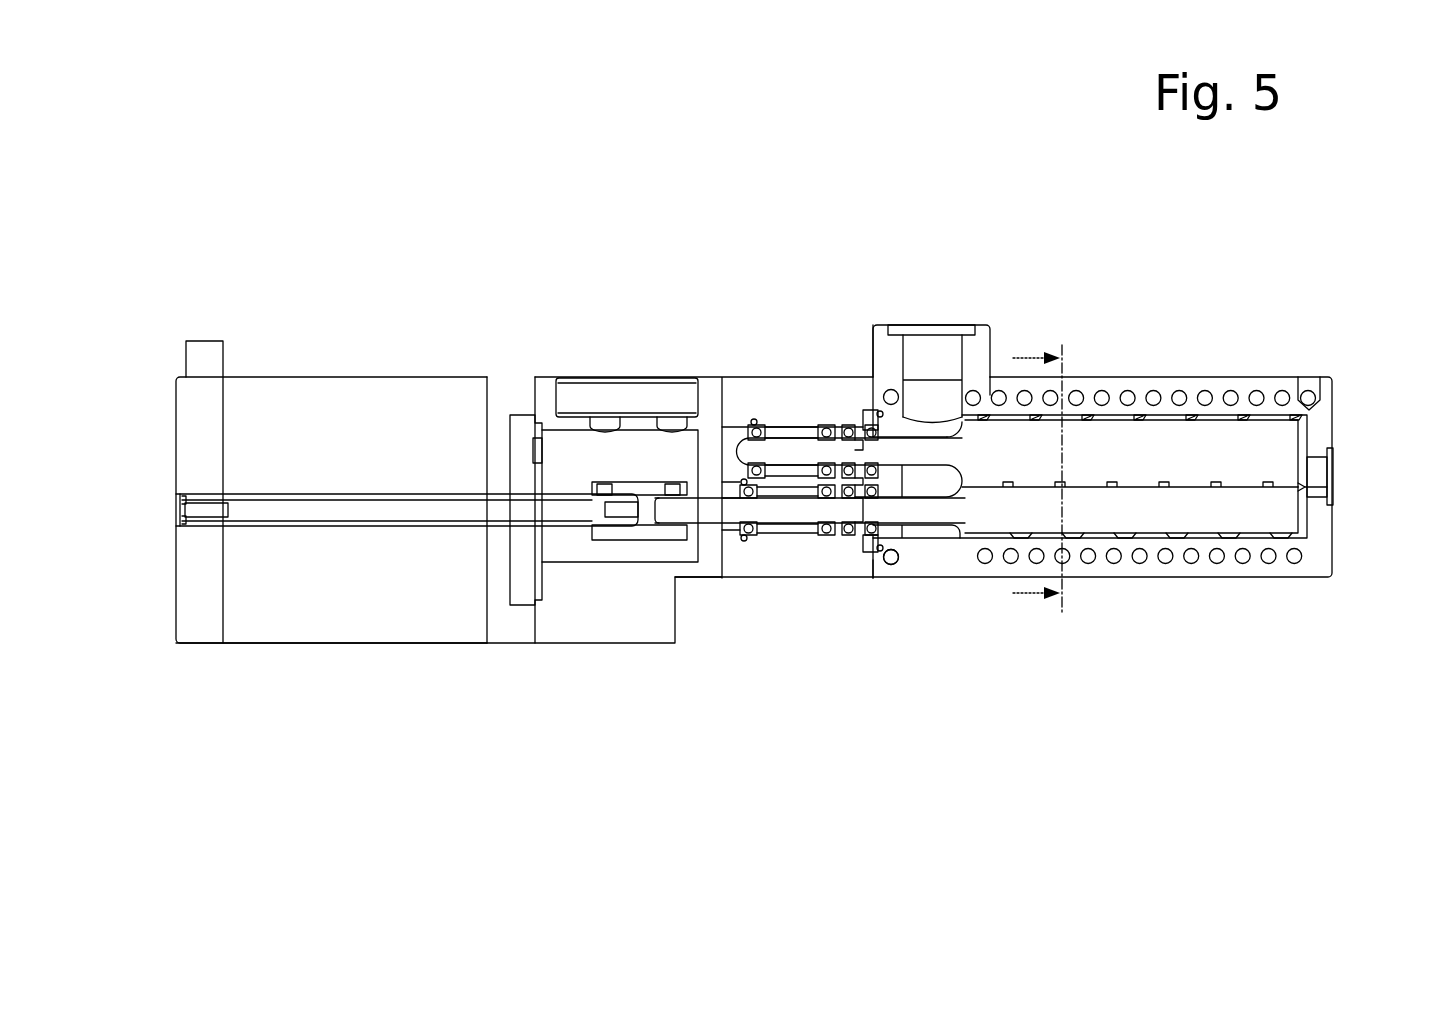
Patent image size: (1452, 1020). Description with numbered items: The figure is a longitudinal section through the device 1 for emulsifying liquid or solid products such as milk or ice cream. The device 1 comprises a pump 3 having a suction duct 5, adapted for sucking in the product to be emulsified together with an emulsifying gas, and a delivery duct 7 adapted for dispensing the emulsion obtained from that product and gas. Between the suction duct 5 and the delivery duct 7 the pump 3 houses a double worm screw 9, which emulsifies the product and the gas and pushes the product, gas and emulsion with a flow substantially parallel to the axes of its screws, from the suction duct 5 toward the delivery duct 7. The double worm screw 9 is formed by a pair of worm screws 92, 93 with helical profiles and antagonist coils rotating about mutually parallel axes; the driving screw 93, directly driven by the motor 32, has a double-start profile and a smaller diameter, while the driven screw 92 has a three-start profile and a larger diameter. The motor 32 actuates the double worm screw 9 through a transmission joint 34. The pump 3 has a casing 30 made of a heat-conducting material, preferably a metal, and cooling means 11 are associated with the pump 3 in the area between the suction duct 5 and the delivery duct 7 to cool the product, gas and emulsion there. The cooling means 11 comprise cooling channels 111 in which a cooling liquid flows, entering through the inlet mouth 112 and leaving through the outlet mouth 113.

The device for emulsifying liquid or solid products 1 is at (486, 232).
The pump 3 is at (834, 322).
The suction duct 5 is at (926, 314).
The delivery duct 7 is at (1345, 487).
The double worm screw 9 is at (1165, 402).
The cooling means 11 is at (961, 571).
The casing 30 is at (1000, 580).
The motor 32 is at (366, 362).
The transmission joint 34 is at (631, 362).
The driven screw 92 is at (1253, 455).
The driving screw 93 is at (1210, 512).
The cooling channels 111 is at (1099, 390).
The inlet mouth 112 is at (1308, 388).
The outlet mouth 113 is at (880, 578).